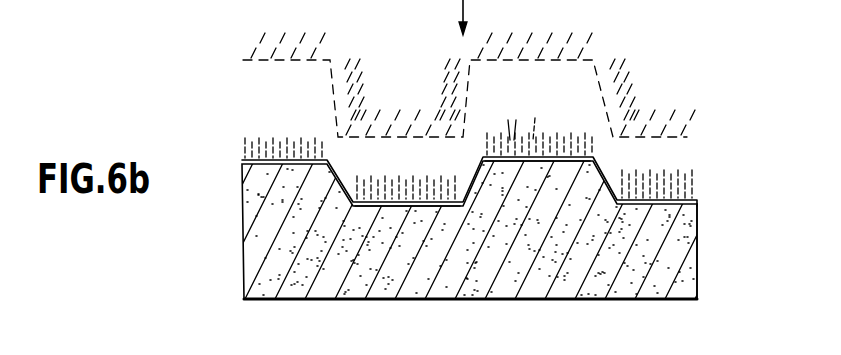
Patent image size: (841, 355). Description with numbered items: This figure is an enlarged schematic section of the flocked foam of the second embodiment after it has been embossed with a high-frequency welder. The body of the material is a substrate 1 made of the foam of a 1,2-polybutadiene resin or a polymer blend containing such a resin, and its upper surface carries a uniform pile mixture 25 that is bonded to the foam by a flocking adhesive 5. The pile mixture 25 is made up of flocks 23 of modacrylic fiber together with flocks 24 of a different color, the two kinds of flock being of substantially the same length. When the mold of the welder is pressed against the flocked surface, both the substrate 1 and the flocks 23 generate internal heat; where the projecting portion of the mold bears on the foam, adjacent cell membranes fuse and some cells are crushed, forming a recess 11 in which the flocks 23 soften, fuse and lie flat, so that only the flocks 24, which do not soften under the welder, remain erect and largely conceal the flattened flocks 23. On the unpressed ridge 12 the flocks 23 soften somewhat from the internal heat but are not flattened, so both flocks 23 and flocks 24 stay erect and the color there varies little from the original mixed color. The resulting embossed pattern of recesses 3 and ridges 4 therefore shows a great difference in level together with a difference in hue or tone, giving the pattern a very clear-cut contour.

The substrate 1 is at (444, 262).
The recesses 3 is at (379, 176).
The ridges 4 is at (568, 134).
The flocking adhesive 5 is at (697, 226).
The recess 11 is at (383, 224).
The ridge 12 is at (538, 170).
The flocks of modacrylic fiber 23 is at (512, 128).
The flocks 24 is at (537, 125).
The pile mixture 25 is at (556, 95).